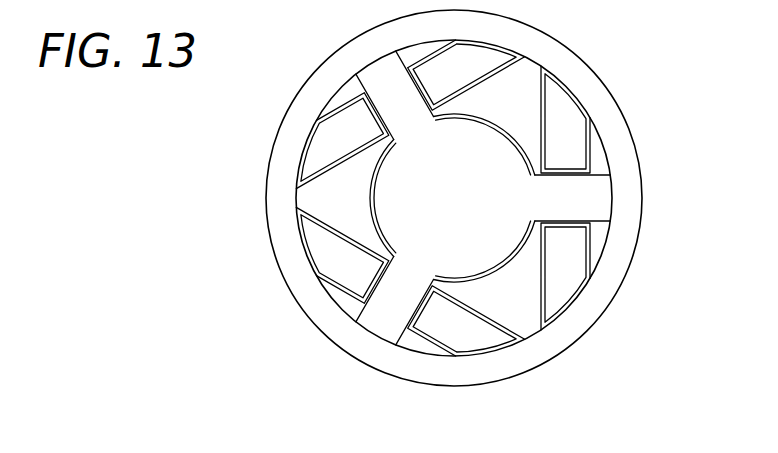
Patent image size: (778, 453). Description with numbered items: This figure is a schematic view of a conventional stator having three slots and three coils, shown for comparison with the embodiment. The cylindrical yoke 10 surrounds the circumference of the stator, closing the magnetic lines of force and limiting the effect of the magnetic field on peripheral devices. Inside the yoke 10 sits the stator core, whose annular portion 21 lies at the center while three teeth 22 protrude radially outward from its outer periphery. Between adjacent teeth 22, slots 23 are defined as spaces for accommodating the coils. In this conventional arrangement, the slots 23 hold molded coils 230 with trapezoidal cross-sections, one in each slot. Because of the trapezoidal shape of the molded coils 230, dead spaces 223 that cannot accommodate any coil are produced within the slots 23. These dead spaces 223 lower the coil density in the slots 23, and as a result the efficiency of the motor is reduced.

The yoke 10 is at (328, 82).
The annular portion 21 is at (368, 202).
The teeth 22 is at (595, 188).
The slots 23 is at (413, 313).
The dead spaces 223 is at (517, 82).
The molded coils 230 is at (572, 117).